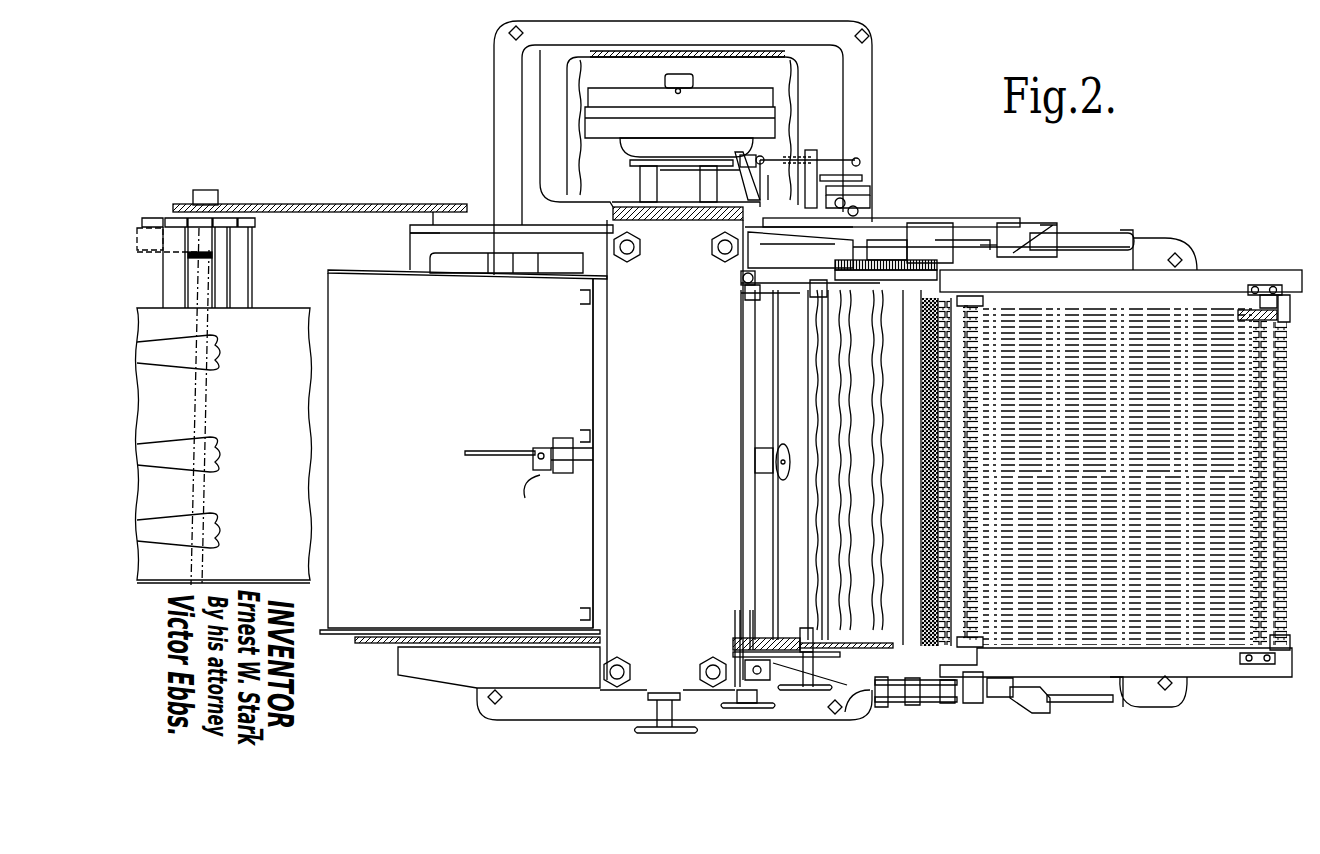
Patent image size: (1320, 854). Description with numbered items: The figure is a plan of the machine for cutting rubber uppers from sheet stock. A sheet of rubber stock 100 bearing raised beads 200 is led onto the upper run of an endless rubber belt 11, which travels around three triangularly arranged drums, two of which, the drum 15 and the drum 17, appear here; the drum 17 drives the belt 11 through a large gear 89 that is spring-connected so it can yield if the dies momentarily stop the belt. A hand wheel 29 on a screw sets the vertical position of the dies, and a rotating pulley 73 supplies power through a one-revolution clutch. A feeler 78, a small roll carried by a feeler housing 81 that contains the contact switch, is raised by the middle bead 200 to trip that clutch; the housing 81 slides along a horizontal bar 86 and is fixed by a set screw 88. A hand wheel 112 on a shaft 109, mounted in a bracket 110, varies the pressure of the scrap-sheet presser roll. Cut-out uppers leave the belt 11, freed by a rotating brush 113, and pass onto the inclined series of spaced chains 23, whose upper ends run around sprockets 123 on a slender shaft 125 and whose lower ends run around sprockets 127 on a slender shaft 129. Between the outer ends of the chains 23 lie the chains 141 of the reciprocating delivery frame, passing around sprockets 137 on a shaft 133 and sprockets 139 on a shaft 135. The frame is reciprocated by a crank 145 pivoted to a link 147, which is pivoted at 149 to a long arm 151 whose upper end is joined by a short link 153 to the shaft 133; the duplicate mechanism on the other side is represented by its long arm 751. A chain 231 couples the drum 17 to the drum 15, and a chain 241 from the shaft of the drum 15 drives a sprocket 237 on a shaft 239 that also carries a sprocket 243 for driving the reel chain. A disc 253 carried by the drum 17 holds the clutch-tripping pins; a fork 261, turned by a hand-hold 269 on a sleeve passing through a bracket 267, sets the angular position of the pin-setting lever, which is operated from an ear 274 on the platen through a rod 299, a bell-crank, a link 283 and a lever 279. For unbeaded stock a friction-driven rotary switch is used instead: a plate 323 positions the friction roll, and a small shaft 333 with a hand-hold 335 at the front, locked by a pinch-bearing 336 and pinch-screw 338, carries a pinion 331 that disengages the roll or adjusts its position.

The endless rubber belt 11 is at (343, 612).
The drum 15 is at (353, 270).
The drum 17 is at (887, 460).
The spaced chains 23 is at (1175, 330).
The hand wheel 29 is at (783, 442).
The rotating pulley 73 is at (720, 100).
The feeler 78 is at (568, 475).
The feeler housing 81 is at (535, 462).
The horizontal bar 86 is at (478, 456).
The set screw 88 is at (540, 480).
The large gear 89 is at (870, 260).
The sheet of rubber stock 100 is at (292, 317).
The shaft 109 is at (815, 395).
The bracket 110 is at (755, 248).
The hand wheel 112 is at (810, 700).
The rotating brush 113 is at (926, 403).
The sprockets 123 is at (936, 370).
The slender shaft 125 is at (940, 333).
The sprockets 127 is at (1277, 320).
The slender shaft 129 is at (1267, 283).
The slender shaft 133 is at (977, 618).
The slender shaft 135 is at (1282, 645).
The sprockets 137 is at (973, 526).
The sprockets 139 is at (1277, 567).
The chains 141 is at (1213, 333).
The crank 145 is at (902, 687).
The link 147 is at (932, 703).
The pivot 149 is at (1043, 712).
The long arm 151 is at (1020, 700).
The short link 153 is at (982, 703).
The raised beads 200 is at (220, 330).
The chain 231 is at (390, 645).
The sprocket 237 is at (228, 205).
The shaft 239 is at (208, 278).
The chain 241 is at (337, 205).
The sprocket 243 is at (253, 227).
The disc 253 is at (935, 232).
The fork 261 is at (900, 220).
The bracket 267 is at (853, 200).
The hand-hold 269 is at (835, 182).
The ear 274 is at (750, 288).
The lever 279 is at (832, 152).
The link 283 is at (763, 175).
The rod 299 is at (742, 278).
The plate 323 is at (858, 206).
The pinion 331 is at (757, 150).
The small shaft 333 is at (747, 638).
The hand-hold 335 is at (752, 708).
The pinch-bearing 336 is at (742, 700).
The pinch-screw 338 is at (760, 680).
The long arm 751 is at (1040, 230).